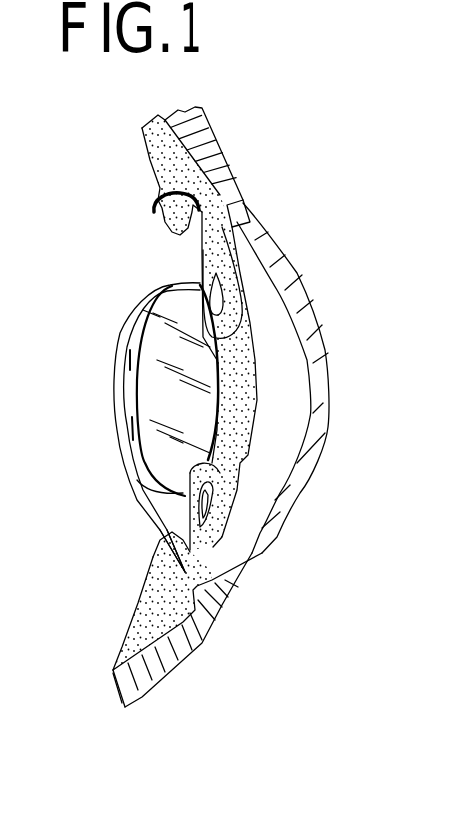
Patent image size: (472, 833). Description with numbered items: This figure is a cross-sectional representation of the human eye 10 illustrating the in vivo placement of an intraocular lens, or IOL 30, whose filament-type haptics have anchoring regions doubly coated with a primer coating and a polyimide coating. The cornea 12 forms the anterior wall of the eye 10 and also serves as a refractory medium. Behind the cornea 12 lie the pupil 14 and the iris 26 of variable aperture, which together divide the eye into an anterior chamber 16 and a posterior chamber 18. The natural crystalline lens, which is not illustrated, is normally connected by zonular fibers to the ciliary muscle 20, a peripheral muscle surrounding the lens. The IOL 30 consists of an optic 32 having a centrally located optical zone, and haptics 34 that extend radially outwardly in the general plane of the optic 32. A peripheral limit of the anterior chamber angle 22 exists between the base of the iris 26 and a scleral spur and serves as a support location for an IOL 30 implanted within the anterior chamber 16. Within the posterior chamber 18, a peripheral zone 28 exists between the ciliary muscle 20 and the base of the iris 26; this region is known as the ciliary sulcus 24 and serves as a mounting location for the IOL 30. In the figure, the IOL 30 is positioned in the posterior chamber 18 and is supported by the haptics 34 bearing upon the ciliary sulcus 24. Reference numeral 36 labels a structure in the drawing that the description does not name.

The eye 10 is at (211, 415).
The cornea 12 is at (327, 427).
The pupil 14 is at (230, 373).
The anterior chamber 16 is at (270, 298).
The posterior chamber 18 is at (107, 294).
The ciliary muscle 20 is at (176, 533).
The anterior chamber angle 22 is at (210, 563).
The ciliary sulcus 24 is at (200, 635).
The iris 26 is at (232, 491).
The peripheral zone 28 is at (183, 550).
The IOL 30 is at (103, 387).
The optic 32 is at (150, 352).
The haptics 34 is at (124, 478).
The ora serrata 36 is at (153, 208).